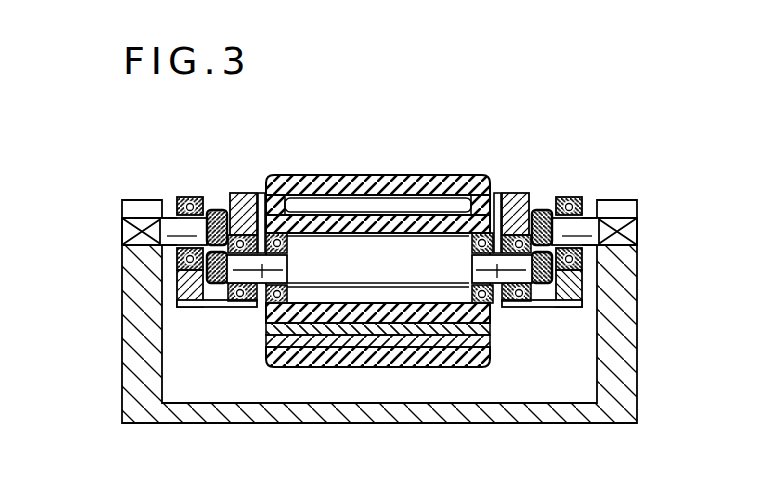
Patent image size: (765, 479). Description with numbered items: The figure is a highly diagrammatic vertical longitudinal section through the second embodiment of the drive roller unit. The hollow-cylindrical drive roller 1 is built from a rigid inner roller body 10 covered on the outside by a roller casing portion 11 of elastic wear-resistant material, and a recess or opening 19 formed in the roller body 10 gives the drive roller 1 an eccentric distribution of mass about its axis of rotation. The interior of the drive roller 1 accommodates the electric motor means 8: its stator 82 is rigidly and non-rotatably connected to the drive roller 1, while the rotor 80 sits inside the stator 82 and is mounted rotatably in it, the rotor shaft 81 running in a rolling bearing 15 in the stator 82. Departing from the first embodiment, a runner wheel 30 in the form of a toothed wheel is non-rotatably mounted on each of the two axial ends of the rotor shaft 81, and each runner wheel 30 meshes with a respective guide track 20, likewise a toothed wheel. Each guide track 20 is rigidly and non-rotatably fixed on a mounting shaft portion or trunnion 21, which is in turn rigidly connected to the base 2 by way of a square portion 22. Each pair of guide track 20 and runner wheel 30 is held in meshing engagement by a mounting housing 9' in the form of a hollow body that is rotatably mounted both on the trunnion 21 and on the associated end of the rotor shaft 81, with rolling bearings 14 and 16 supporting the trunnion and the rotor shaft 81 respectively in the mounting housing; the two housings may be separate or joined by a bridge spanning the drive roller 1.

The drive roller 1 is at (463, 171).
The base 2 is at (622, 358).
The electric motor means 8 is at (498, 194).
The mounting housing 9' is at (387, 178).
The roller body 10 is at (275, 178).
The roller casing portion 11 is at (339, 177).
The rolling bearing 14 is at (190, 204).
The rolling bearing 15 is at (288, 254).
The rolling bearing 16 is at (233, 309).
The recess or opening 19 is at (386, 178).
The guide track 20 is at (214, 211).
The mounting shaft portion or trunnion 21 is at (171, 218).
The square portion 22 is at (118, 231).
The runner wheel 30 is at (190, 310).
The rotor 80 is at (428, 178).
The rotor shaft 81 is at (262, 297).
The stator 82 is at (292, 364).